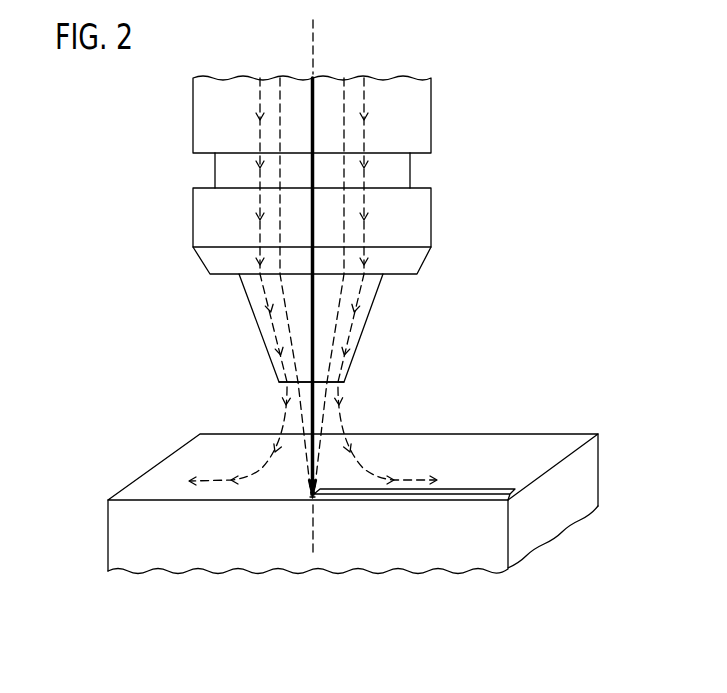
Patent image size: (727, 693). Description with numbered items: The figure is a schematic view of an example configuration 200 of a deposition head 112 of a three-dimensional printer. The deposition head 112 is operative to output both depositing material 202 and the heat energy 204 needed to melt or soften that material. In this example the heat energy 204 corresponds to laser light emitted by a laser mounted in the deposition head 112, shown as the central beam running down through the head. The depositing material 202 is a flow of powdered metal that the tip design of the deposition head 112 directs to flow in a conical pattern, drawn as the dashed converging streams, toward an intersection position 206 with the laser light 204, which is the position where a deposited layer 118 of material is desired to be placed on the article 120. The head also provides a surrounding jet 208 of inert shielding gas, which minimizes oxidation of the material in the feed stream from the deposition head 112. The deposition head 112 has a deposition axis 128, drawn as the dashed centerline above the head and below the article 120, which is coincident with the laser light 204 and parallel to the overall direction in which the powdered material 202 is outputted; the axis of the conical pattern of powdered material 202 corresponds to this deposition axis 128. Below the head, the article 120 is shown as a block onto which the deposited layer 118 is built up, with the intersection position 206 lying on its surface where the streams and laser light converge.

The configuration 200 is at (500, 63).
The deposition head 112 is at (427, 113).
The deposition axis 128 is at (313, 45).
The depositing material 202 is at (298, 412).
The heat energy 204 is at (316, 418).
The surrounding jet of inert shielding gas 208 is at (337, 393).
The deposited layer of material 118 is at (473, 489).
The article 120 is at (488, 521).
The intersection position 206 is at (303, 506).